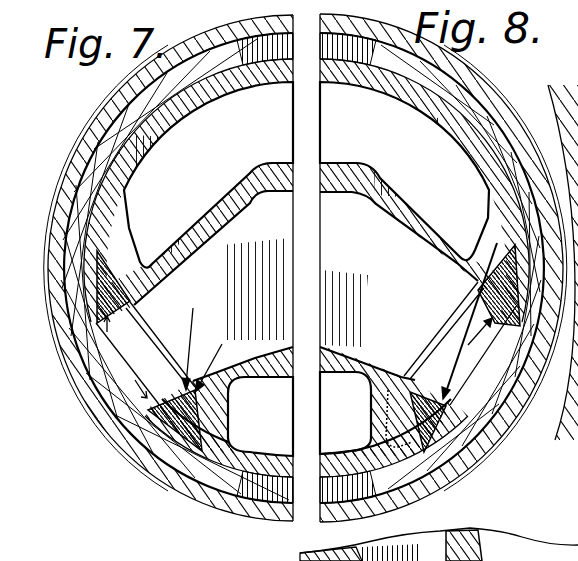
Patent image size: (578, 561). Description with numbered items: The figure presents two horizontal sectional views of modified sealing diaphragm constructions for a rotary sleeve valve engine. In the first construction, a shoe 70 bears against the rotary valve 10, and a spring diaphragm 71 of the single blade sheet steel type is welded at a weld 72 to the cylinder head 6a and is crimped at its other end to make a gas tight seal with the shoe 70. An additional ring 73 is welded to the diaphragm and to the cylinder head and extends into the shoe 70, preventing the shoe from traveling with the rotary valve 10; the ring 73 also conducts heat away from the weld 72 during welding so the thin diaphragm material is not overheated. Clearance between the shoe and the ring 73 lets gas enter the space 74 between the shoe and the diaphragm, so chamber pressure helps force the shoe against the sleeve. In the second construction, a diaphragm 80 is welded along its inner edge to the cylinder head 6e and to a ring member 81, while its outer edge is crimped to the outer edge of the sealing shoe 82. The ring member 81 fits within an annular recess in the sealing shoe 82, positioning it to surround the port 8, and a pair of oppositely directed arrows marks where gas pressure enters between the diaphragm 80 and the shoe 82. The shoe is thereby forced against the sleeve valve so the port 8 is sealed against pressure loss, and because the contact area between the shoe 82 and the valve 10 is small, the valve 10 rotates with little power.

In FIG. 7, the cylinder head 6a is at (243, 205).
In FIG. 8, the cylinder head 6e is at (420, 201).
In FIG. 8, the port 8 is at (497, 350).
In FIG. 7, the rotary valve 10 is at (113, 402).
In FIG. 8, the rotary valve 10 is at (577, 422).
In FIG. 7, the shoe 70 is at (110, 323).
In FIG. 7, the spring diaphragm 71 is at (200, 453).
In FIG. 7, the weld 72 is at (193, 333).
In FIG. 7, the ring 73 is at (145, 352).
In FIG. 7, the space 74 is at (216, 354).
In FIG. 8, the diaphragm 80 is at (473, 261).
In FIG. 8, the ring member 81 is at (486, 293).
In FIG. 8, the sealing shoe 82 is at (450, 433).